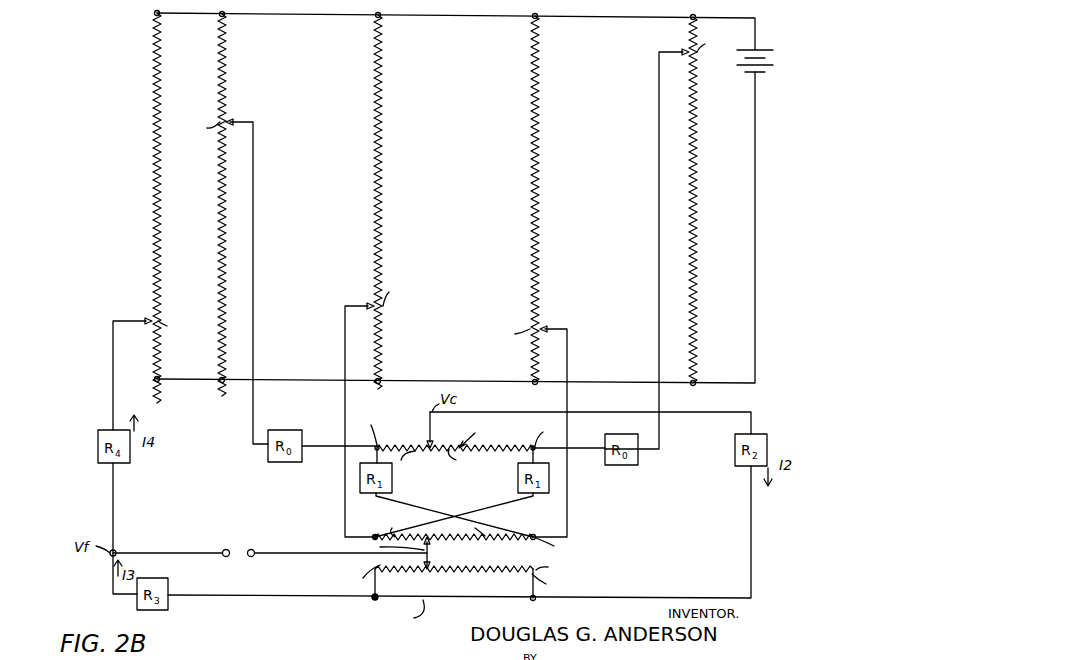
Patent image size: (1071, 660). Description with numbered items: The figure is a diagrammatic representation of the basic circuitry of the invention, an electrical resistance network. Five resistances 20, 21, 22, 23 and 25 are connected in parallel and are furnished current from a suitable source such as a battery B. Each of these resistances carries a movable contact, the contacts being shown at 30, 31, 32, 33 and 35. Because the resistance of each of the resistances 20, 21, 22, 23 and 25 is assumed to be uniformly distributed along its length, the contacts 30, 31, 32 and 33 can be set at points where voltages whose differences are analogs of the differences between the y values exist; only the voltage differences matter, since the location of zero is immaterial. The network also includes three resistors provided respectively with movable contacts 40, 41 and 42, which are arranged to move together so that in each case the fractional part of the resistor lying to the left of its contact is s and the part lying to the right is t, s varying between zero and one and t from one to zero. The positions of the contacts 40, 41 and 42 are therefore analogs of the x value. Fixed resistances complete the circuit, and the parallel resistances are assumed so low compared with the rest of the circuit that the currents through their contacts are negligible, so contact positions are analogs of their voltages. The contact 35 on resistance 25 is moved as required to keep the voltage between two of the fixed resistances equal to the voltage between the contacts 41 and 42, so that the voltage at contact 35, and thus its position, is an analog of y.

The resistance 20 is at (226, 88).
The resistance 21 is at (382, 137).
The resistance 22 is at (540, 146).
The resistance 23 is at (697, 196).
The resistance 25 is at (155, 191).
The movable contact 30 is at (246, 122).
The movable contact 31 is at (356, 306).
The movable contact 32 is at (557, 329).
The movable contact 33 is at (672, 52).
The movable contact 35 is at (125, 321).
The movable contact 40 is at (428, 440).
The movable contact 41 is at (430, 545).
The movable contact 42 is at (430, 560).
The battery B is at (762, 50).